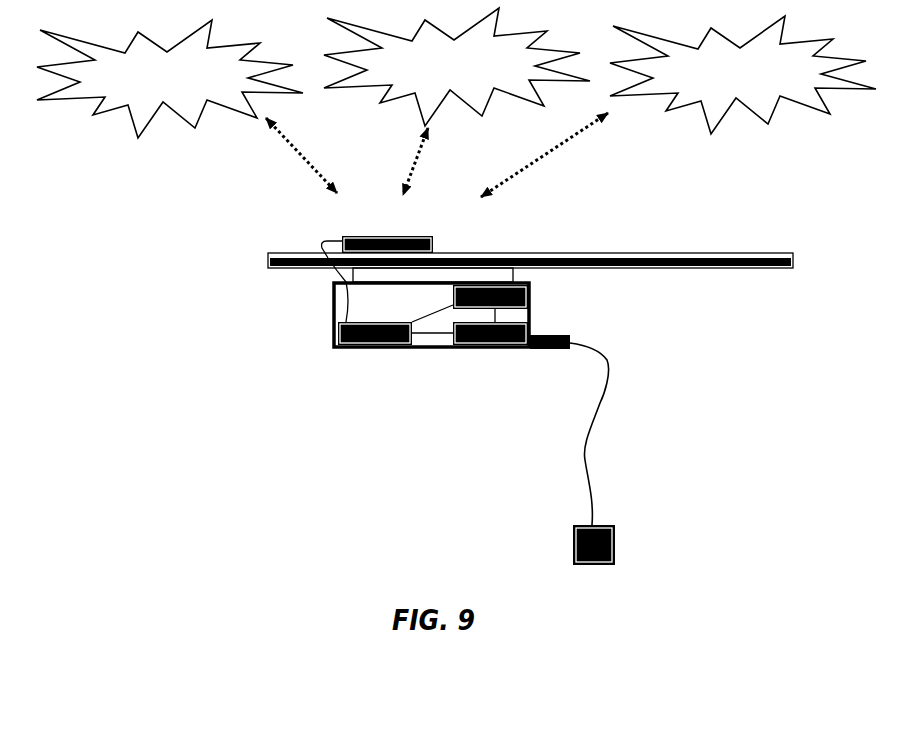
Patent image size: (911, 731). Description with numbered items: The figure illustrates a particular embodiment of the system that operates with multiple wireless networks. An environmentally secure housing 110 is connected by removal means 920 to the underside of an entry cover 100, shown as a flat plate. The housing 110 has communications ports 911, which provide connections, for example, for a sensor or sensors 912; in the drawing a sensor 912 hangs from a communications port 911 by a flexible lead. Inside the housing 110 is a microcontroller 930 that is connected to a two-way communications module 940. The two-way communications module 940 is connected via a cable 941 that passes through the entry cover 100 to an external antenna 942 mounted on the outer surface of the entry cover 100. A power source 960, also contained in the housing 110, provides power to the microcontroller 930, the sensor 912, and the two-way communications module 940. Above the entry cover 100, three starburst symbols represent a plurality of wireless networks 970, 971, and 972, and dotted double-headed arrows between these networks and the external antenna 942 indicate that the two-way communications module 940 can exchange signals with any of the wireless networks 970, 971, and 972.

The entry cover 100 is at (522, 249).
The environmentally secure housing 110 is at (328, 335).
The communications ports 911 is at (575, 335).
The sensor 912 is at (618, 537).
The removal means 920 is at (532, 277).
The microcontroller 930 is at (495, 345).
The two-way communications module 940 is at (368, 344).
The cable 941 is at (328, 275).
The external antenna 942 is at (445, 243).
The power source 960 is at (506, 285).
The wireless network 970 is at (187, 106).
The wireless network 971 is at (457, 101).
The wireless network 972 is at (678, 106).